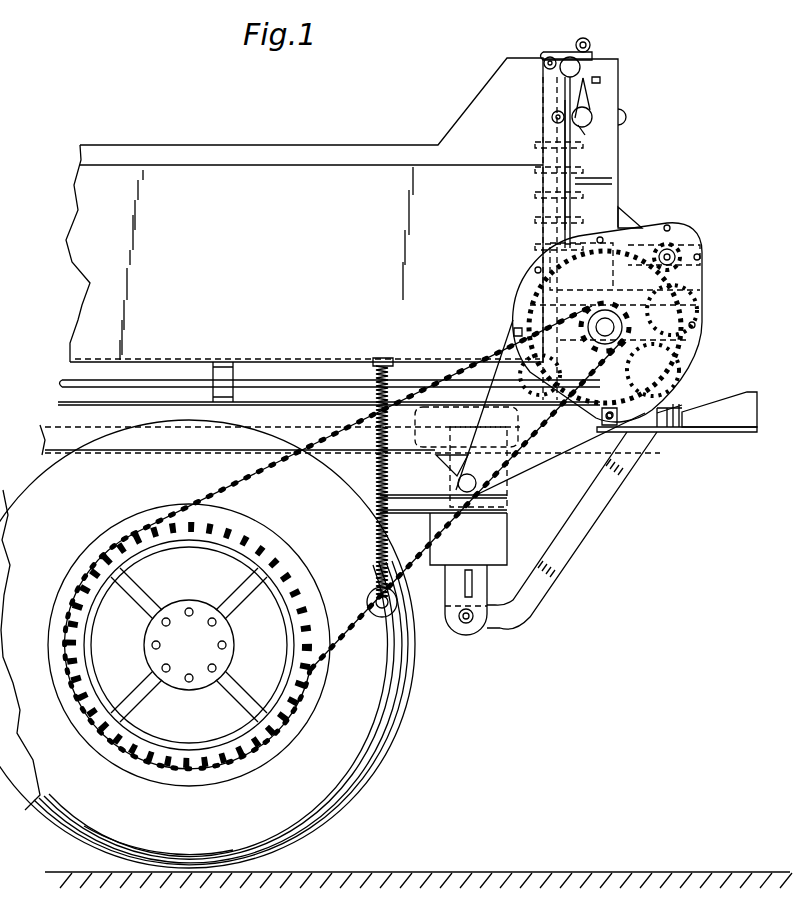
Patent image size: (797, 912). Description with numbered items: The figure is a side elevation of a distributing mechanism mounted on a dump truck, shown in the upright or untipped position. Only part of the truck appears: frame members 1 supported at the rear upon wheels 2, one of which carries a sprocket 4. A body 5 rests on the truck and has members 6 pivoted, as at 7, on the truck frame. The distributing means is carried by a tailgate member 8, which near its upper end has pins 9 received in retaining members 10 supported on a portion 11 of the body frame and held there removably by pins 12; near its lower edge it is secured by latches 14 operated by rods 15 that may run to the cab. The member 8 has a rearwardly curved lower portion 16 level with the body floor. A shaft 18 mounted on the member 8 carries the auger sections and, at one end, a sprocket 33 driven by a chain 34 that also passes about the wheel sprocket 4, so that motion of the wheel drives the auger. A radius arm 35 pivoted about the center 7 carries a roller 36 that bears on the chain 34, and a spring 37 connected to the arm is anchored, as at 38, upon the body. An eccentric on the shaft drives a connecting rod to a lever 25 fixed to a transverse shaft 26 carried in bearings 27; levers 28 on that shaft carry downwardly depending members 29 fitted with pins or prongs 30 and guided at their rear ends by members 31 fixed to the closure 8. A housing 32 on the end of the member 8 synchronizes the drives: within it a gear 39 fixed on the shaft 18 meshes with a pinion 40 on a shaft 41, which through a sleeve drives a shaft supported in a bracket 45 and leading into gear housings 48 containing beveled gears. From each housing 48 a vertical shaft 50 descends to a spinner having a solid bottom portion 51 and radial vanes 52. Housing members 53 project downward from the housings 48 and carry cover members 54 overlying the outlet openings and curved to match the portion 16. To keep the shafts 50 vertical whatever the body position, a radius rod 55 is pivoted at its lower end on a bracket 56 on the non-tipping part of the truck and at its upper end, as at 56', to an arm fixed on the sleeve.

The frame members 1 is at (492, 536).
The wheels 2 is at (395, 732).
The sprocket 4 is at (285, 578).
The body 5 is at (298, 180).
The members 6 is at (440, 462).
The pivot 7 is at (457, 484).
The member 8 is at (618, 147).
The pins 9 is at (582, 69).
The retaining members 10 is at (600, 80).
The portion of the body frame 11 is at (572, 182).
The pins 12 is at (590, 44).
The latches 14 is at (558, 455).
The rods 15 is at (68, 382).
The curved portion 16 is at (645, 370).
The shaft 18 is at (585, 315).
The lever 25 is at (624, 115).
The shaft 26 is at (594, 139).
The bearings 27 is at (592, 115).
The levers 28 is at (562, 106).
The downwardly depending members 29 is at (552, 120).
The pins or prongs 30 is at (535, 196).
The guide members 31 is at (582, 238).
The housing 32 is at (694, 311).
The sprocket 33 is at (598, 327).
The chain 34 is at (240, 490).
The radius arm 35 is at (466, 505).
The roller 36 is at (395, 612).
The spring 37 is at (378, 468).
The anchor 38 is at (383, 358).
The gear 39 is at (527, 292).
The pinion 40 is at (697, 270).
The shaft 41 is at (675, 243).
The bracket 45 is at (631, 222).
The gear housings 48 is at (703, 236).
The vertical shaft 50 is at (653, 407).
The bottom portion 51 is at (708, 433).
The vanes 52 is at (742, 394).
The housing members 53 is at (705, 305).
The cover member 54 is at (695, 357).
The radius rod 55 is at (600, 505).
The bracket 56 is at (697, 389).
The pivot 56' is at (480, 618).